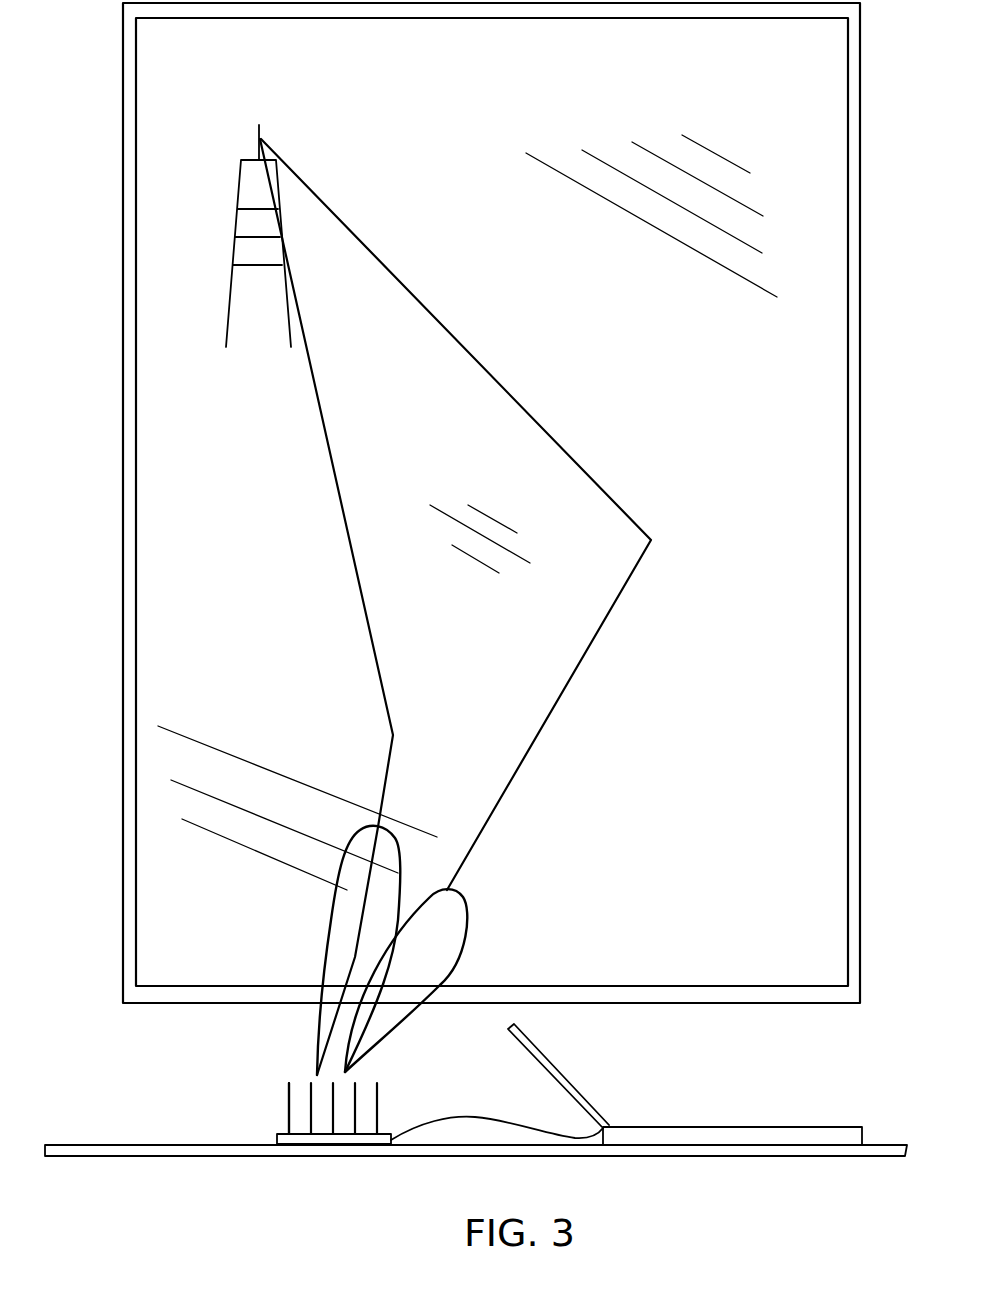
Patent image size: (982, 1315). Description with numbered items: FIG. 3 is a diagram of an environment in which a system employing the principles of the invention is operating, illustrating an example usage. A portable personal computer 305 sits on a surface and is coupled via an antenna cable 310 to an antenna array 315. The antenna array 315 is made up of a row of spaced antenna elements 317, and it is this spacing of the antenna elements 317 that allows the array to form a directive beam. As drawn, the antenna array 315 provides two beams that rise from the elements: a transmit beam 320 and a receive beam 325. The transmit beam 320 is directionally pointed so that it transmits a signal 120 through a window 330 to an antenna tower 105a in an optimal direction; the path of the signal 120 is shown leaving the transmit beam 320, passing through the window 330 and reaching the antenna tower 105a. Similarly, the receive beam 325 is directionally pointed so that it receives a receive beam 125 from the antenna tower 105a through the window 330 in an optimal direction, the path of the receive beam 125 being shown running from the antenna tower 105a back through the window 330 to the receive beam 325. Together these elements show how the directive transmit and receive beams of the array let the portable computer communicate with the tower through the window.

The window 330 is at (811, 66).
The antenna tower 105a is at (240, 144).
The signal 120 is at (477, 357).
The receive beam 125 is at (331, 444).
The transmit beam 320 is at (468, 927).
The receive beam 325 is at (325, 953).
The portable personal computer 305 is at (802, 1125).
The antenna cable 310 is at (450, 1117).
The antenna array 315 is at (261, 1114).
The antenna elements 317 is at (288, 1100).